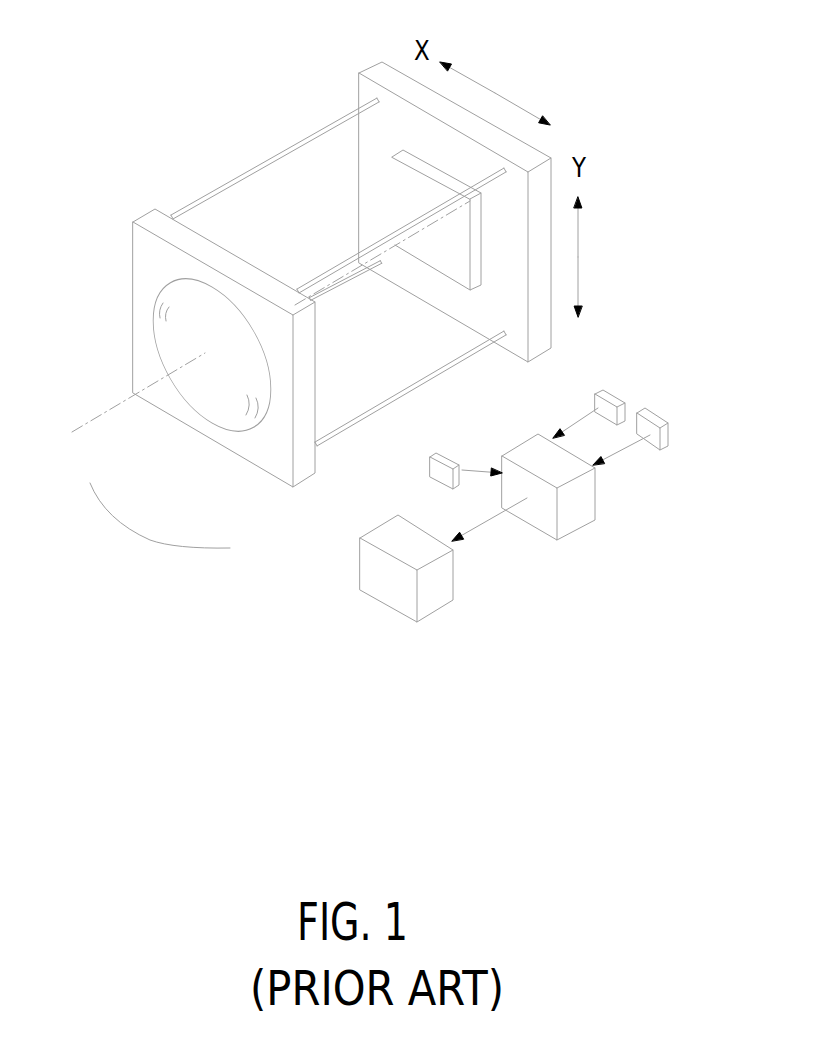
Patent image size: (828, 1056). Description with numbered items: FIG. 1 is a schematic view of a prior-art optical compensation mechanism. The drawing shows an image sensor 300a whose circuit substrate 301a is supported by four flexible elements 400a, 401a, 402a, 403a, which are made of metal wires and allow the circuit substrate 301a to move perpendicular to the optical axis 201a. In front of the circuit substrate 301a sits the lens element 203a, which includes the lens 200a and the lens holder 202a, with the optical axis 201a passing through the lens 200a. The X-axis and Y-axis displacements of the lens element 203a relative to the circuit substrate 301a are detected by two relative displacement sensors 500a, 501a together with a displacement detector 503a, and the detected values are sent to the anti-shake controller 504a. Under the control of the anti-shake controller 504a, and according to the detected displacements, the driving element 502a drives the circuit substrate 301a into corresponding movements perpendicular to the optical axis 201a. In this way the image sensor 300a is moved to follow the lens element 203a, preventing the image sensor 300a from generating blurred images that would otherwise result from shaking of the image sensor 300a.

The lens 200a is at (198, 387).
The optical axis 201a is at (87, 420).
The lens holder 202a is at (257, 445).
The lens element 203a is at (114, 528).
The image sensor 300a is at (395, 202).
The circuit substrate 301a is at (362, 85).
The flexible element 400a is at (270, 158).
The flexible element 401a is at (350, 260).
The flexible element 402a is at (380, 407).
The flexible element 403a is at (348, 282).
The relative displacement sensor 500a is at (608, 397).
The relative displacement sensor 501a is at (652, 421).
The driving element 502a is at (385, 588).
The displacement detector 503a is at (443, 458).
The anti-shake controller 504a is at (572, 523).